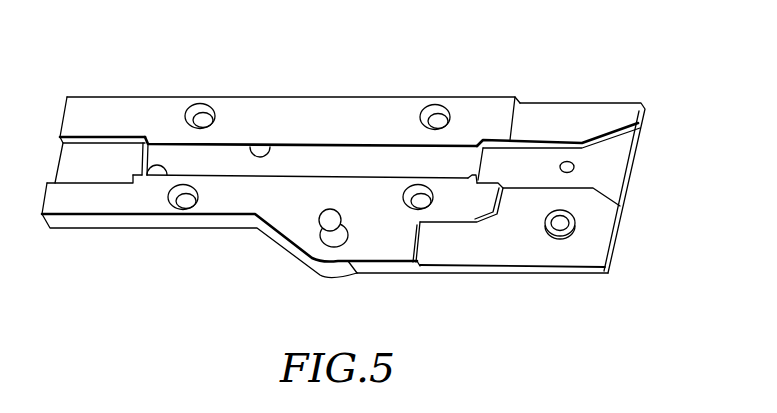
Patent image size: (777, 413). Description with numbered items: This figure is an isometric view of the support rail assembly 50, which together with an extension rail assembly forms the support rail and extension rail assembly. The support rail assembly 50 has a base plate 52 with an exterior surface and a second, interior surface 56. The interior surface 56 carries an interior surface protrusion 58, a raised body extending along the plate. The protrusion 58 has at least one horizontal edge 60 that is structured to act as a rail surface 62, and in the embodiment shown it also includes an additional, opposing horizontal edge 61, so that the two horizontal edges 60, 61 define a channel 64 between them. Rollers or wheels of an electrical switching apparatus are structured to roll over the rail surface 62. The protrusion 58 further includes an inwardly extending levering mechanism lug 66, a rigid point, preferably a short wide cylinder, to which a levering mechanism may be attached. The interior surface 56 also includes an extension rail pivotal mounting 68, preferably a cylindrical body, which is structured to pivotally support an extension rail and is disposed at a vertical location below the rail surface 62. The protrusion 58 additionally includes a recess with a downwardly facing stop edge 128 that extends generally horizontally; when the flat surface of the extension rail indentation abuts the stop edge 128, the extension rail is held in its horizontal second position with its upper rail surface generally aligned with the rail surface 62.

The support rail assembly 50 is at (133, 87).
The base plate 52 is at (612, 173).
The interior surface 56 is at (386, 158).
The interior surface protrusion 58 is at (383, 243).
The horizontal edge 60 is at (150, 168).
The opposing horizontal edge 61 is at (251, 143).
The rail surface 62 is at (233, 163).
The channel 64 is at (317, 160).
The levering mechanism lug 66 is at (322, 226).
The extension rail pivotal mounting 68 is at (560, 242).
The stop edge 128 is at (450, 228).